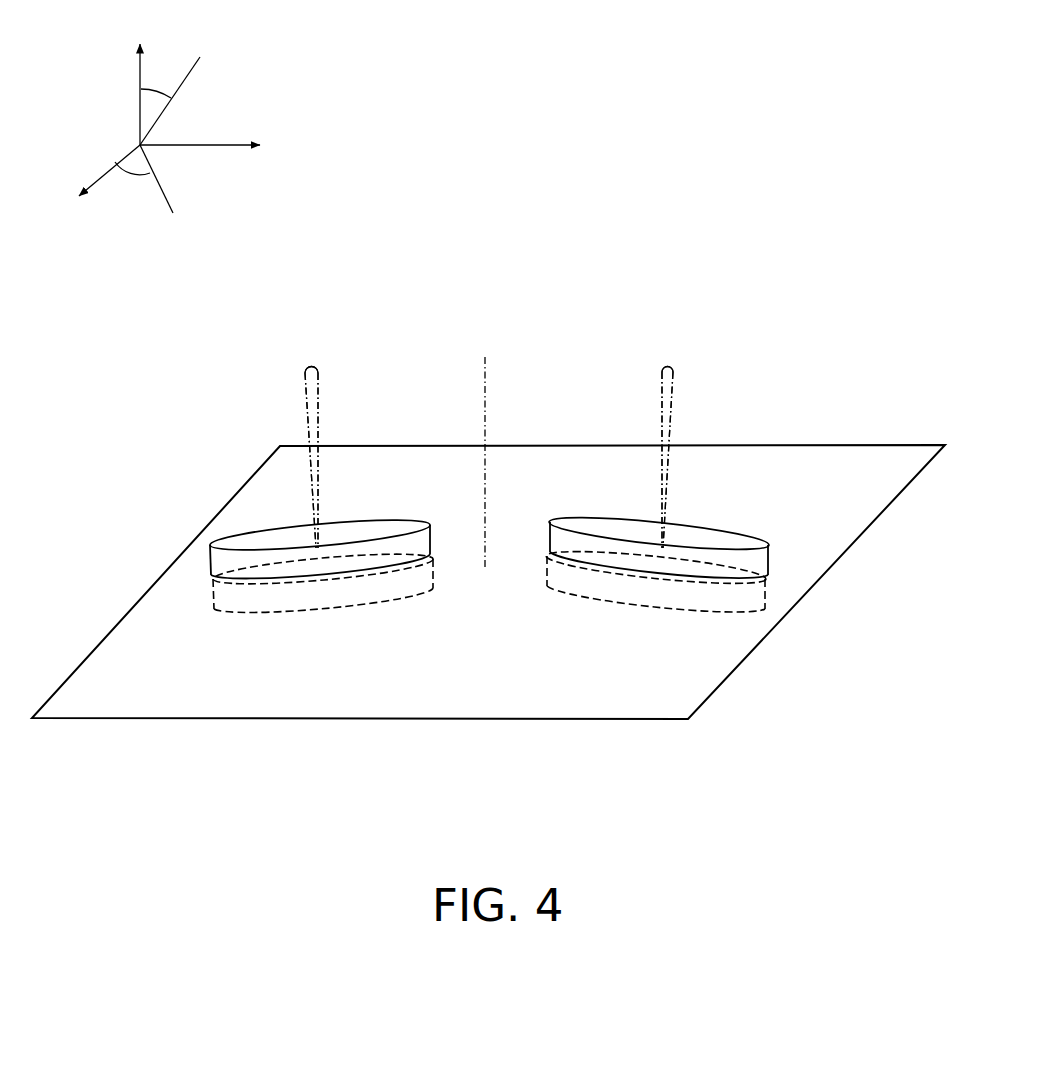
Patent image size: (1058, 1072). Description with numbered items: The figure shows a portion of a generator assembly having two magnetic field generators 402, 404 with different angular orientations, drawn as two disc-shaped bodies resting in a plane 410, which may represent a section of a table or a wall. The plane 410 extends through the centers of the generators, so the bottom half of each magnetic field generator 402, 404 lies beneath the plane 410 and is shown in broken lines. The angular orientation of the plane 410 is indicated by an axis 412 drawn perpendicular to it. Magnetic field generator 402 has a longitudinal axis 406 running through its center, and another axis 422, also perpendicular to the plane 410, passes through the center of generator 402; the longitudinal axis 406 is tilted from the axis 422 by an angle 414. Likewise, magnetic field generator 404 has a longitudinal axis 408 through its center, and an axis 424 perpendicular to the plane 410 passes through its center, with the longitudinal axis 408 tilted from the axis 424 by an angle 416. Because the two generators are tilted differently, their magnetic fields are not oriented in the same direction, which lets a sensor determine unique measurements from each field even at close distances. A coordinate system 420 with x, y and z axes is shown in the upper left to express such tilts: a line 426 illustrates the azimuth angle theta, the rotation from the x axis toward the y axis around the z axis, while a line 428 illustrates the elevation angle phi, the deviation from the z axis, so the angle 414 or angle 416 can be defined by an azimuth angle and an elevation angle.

The magnetic field generator 402 is at (288, 632).
The magnetic field generator 404 is at (629, 615).
The longitudinal axis 406 is at (297, 402).
The longitudinal axis 408 is at (683, 396).
The plane 410 is at (908, 487).
The axis 412 is at (516, 462).
The angle 414 is at (314, 369).
The angle 416 is at (662, 366).
The coordinate system 420 is at (210, 130).
The axis 422 is at (338, 458).
The axis 424 is at (638, 457).
The line 426 is at (179, 196).
The line 428 is at (188, 88).